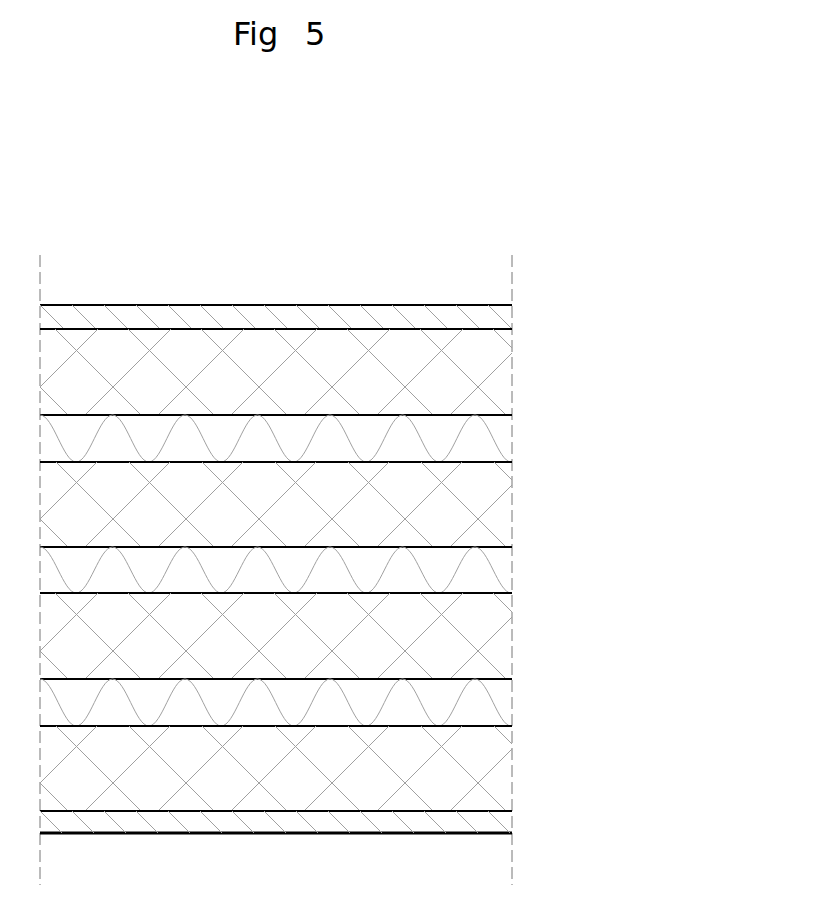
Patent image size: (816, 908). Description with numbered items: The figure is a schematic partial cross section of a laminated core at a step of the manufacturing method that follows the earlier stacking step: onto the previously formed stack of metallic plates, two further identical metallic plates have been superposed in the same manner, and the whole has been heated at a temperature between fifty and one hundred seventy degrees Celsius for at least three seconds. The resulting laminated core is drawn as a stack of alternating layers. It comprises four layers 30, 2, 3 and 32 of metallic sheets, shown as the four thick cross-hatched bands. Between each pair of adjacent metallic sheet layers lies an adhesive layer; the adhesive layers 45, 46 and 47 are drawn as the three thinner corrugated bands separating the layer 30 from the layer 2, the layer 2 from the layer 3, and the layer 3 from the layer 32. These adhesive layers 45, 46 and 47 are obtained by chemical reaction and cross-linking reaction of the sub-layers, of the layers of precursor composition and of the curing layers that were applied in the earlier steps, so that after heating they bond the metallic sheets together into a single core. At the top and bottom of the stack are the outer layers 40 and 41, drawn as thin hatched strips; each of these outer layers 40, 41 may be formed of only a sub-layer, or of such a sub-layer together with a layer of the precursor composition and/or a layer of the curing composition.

The outer layer 40 is at (490, 325).
The layer of metallic sheet 30 is at (502, 372).
The adhesive layer 45 is at (485, 437).
The layer of metallic sheet 2 is at (502, 503).
The adhesive layer 46 is at (485, 575).
The layer of metallic sheet 3 is at (502, 640).
The adhesive layer 47 is at (485, 702).
The layer of metallic sheet 32 is at (502, 770).
The outer layer 41 is at (490, 828).